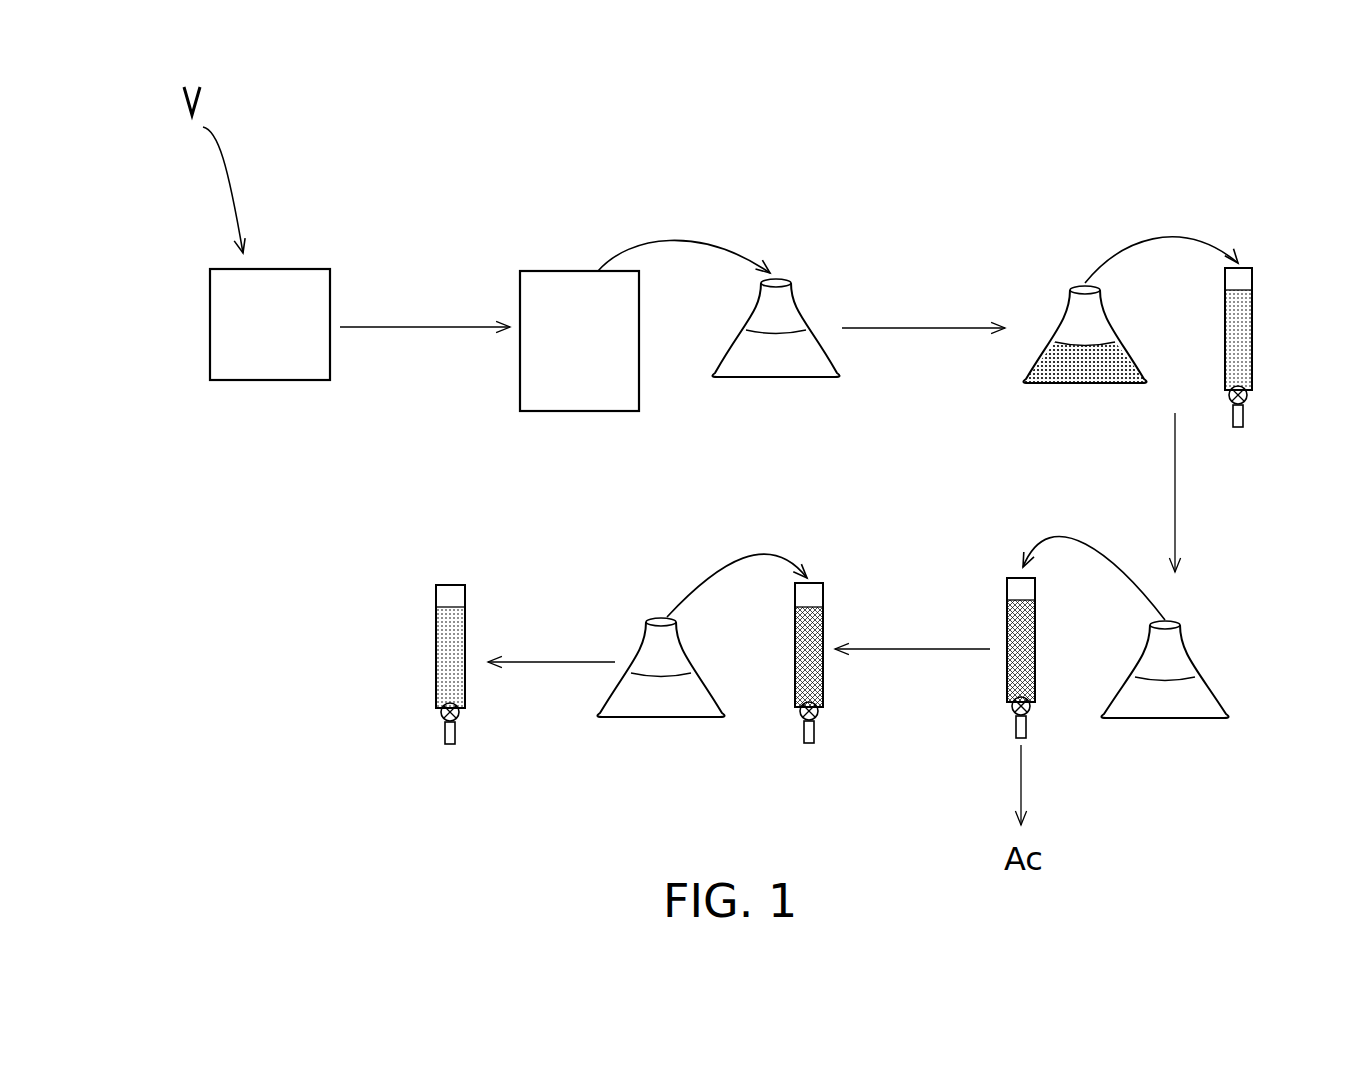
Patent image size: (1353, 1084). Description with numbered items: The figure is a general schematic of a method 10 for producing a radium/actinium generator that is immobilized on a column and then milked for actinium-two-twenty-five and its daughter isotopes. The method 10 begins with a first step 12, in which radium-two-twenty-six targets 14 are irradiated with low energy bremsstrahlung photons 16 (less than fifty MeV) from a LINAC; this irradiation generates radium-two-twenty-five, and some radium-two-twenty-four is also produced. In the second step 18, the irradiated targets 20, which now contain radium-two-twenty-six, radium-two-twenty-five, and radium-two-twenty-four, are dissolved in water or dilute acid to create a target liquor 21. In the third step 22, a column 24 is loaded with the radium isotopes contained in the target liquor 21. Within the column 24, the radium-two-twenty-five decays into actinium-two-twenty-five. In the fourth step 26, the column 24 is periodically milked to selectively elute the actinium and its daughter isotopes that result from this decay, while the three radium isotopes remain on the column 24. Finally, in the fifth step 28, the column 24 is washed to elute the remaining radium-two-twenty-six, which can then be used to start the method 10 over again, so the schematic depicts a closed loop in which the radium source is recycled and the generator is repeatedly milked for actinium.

The method 10 is at (213, 798).
The first step 12 is at (328, 197).
The radium-226 targets 14 is at (258, 368).
The bremsstrahlung photons 16 is at (203, 115).
The second step 18 is at (648, 205).
The irradiated targets 20 is at (538, 398).
The target liquor 21 is at (1062, 378).
The third step 22 is at (1185, 193).
The column 24 is at (1253, 340).
The fourth step 26 is at (1083, 745).
The fifth step 28 is at (640, 592).